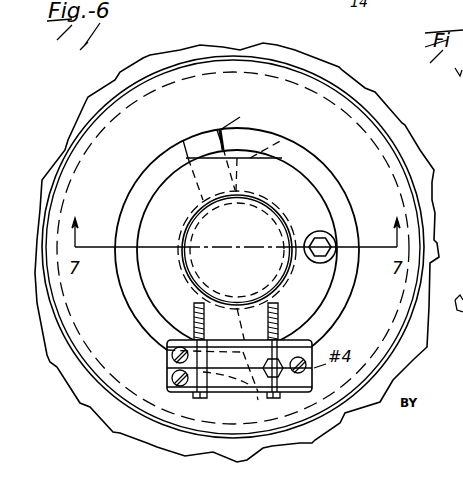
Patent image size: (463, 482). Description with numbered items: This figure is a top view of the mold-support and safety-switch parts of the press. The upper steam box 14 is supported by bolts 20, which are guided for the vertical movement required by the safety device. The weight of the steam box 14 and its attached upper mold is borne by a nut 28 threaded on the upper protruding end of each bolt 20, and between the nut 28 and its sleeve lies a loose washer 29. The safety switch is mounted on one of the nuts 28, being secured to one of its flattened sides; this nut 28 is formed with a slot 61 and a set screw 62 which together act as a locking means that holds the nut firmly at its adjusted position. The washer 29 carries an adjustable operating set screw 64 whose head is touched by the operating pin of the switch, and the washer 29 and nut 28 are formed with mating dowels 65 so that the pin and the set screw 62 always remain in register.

The upper steam box 14 is at (413, 127).
The bolt 20 is at (262, 220).
The nut 28 is at (289, 170).
The loose washer 29 is at (335, 192).
The slot 61 is at (264, 147).
The set screw 62 is at (325, 238).
The adjustable operating set screw 64 is at (268, 393).
The mating dowels 65 is at (285, 320).